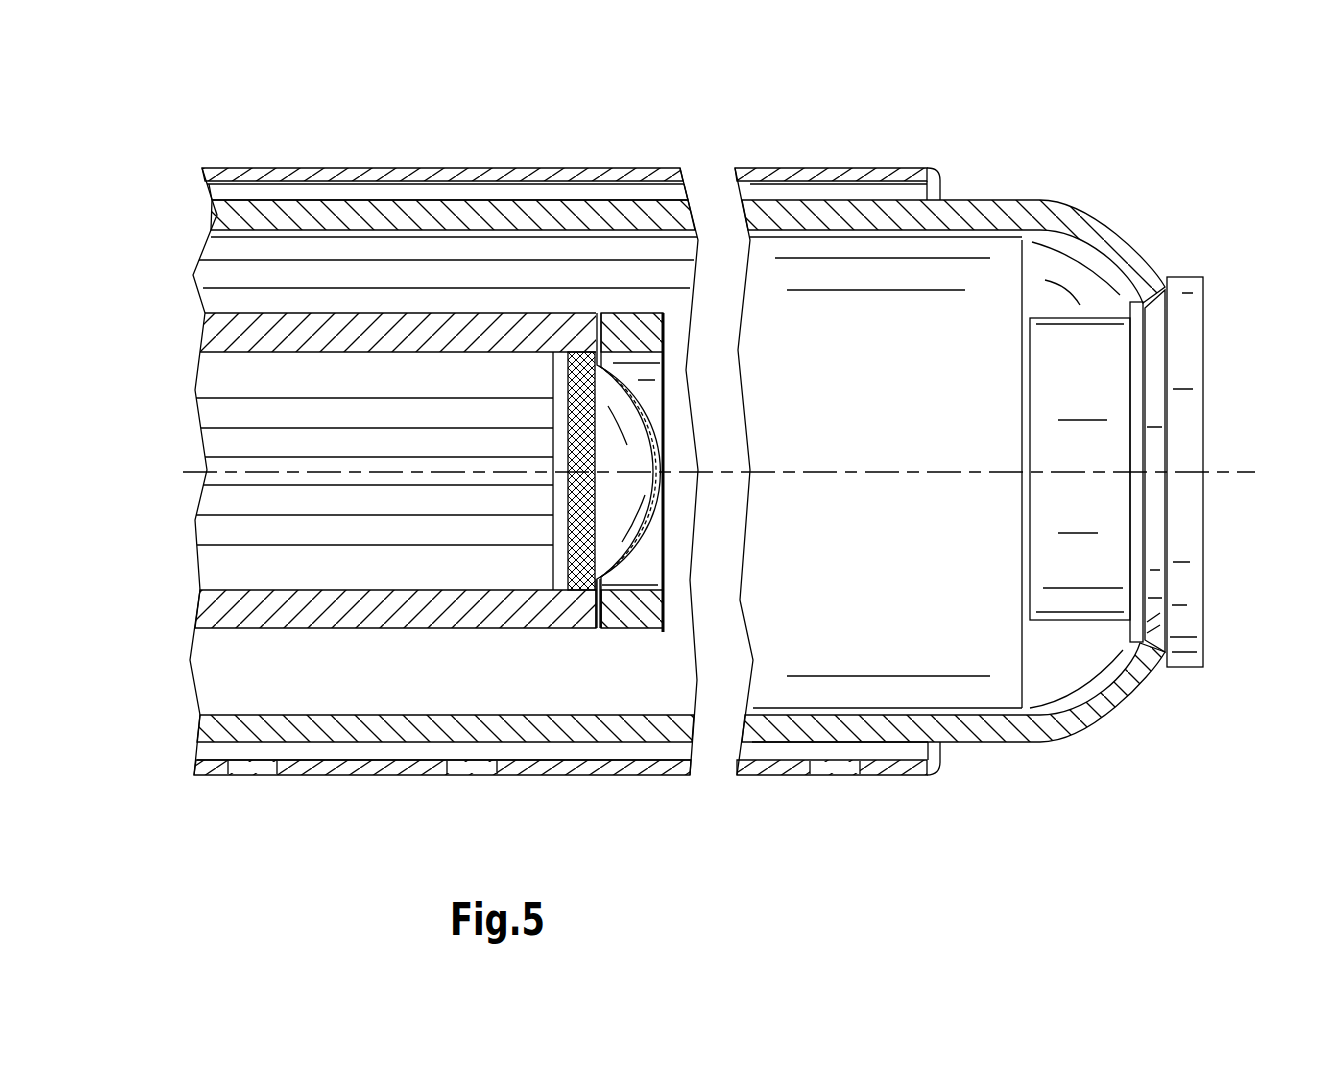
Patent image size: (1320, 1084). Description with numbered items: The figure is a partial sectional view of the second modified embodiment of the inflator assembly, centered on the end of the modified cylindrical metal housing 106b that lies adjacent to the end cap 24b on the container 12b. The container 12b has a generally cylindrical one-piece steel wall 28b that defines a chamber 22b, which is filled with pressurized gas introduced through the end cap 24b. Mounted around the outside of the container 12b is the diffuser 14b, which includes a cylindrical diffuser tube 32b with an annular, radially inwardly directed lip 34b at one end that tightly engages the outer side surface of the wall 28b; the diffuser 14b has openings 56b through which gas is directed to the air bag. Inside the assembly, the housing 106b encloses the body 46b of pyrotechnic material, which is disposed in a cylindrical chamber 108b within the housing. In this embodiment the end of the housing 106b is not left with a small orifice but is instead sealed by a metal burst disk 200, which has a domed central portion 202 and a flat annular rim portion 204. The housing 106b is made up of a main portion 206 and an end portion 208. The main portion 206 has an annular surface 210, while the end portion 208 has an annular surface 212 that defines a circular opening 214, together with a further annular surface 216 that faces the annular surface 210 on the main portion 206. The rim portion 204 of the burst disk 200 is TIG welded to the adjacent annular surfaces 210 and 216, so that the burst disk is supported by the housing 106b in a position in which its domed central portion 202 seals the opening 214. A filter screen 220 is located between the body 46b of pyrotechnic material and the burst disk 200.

The diffuser 14b is at (248, 170).
The container 12b is at (437, 198).
The diffuser tube 32b is at (362, 173).
The one-piece steel wall 28b is at (537, 217).
The lip 34b is at (943, 183).
The modified cylindrical metal housing 106b is at (238, 334).
The body of pyrotechnic material 46b is at (350, 372).
The main portion 206 is at (545, 332).
The flat annular rim portion 204 is at (605, 330).
The end portion 208 is at (650, 331).
The filter screen 220 is at (565, 383).
The metal burst disk 200 is at (648, 402).
The domed central portion 202 is at (643, 430).
The circular opening 214 is at (656, 554).
The annular surface 212 is at (667, 607).
The cylindrical chamber 108b is at (558, 562).
The annular surface 216 is at (593, 622).
The annular surface 210 is at (602, 607).
The openings 56b is at (253, 768).
The chamber 22b is at (830, 620).
The end cap 24b is at (1183, 670).